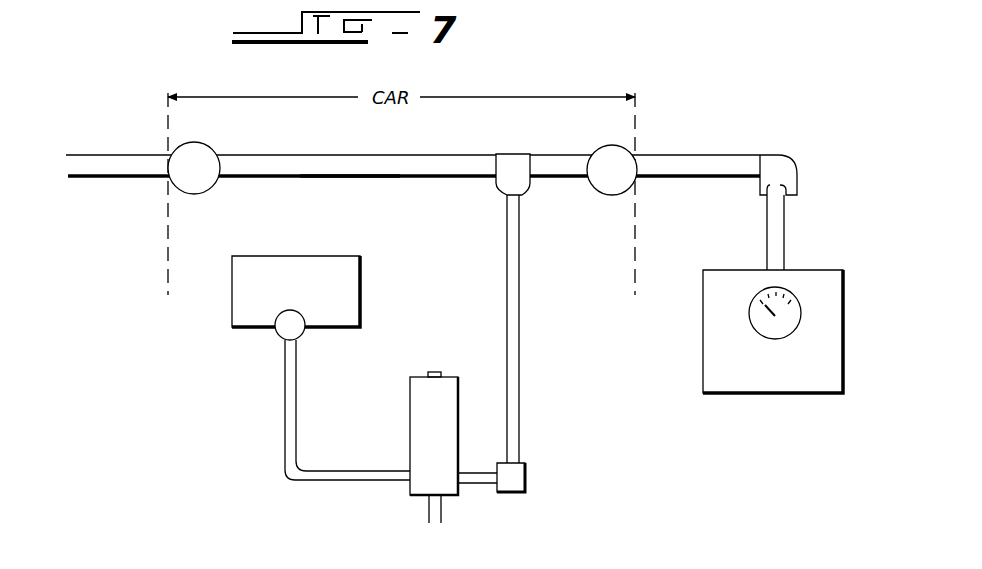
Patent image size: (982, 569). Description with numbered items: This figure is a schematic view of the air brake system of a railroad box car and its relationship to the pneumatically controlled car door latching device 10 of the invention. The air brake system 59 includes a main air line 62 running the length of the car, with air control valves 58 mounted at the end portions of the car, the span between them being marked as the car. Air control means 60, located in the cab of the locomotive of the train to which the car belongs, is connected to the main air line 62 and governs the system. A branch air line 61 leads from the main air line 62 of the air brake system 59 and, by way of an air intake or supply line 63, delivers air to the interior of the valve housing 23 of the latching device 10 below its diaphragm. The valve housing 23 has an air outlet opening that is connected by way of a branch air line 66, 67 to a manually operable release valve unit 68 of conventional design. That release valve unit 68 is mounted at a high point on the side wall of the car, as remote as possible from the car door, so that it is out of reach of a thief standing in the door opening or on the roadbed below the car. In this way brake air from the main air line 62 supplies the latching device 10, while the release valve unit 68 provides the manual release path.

The valve assembly 10 is at (451, 427).
The valve housing 23 is at (440, 441).
The air control valves 58 is at (197, 162).
The air brake system 59 is at (405, 155).
The air control means 60 is at (792, 287).
The branch air line 61 is at (521, 340).
The main air line 62 is at (356, 170).
The air intake or supply line 63 is at (478, 487).
The branch air line 66 is at (378, 483).
The branch air line 67 is at (291, 416).
The manually operable release valve unit 68 is at (300, 332).